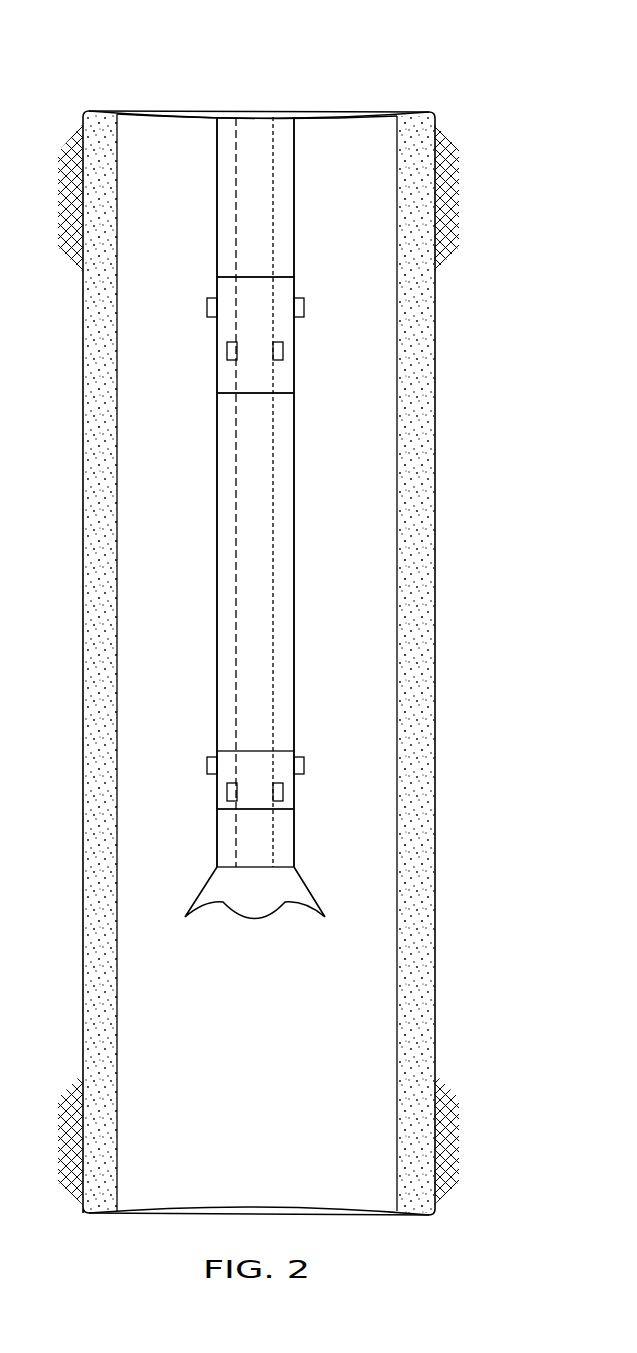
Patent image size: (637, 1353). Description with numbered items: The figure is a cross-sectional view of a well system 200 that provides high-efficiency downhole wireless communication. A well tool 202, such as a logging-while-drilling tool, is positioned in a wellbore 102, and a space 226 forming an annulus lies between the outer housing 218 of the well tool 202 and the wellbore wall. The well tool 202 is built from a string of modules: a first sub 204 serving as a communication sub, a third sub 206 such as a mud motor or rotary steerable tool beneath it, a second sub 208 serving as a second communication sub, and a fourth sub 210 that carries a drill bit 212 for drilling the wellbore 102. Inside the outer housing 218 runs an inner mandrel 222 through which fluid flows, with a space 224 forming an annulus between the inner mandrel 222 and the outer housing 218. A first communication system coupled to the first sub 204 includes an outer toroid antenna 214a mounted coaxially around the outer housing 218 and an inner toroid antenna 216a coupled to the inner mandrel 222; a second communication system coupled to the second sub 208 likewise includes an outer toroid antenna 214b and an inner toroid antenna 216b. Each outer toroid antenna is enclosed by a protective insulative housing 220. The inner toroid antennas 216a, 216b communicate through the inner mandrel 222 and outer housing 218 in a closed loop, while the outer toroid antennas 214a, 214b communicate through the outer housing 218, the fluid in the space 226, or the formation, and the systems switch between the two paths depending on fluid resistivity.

The well system 200 is at (323, 72).
The wellbore 102 is at (397, 543).
The space 226 is at (378, 617).
The well tool 202 is at (295, 213).
The outer housing 218 is at (295, 153).
The inner mandrel 222 is at (217, 160).
The space 224 is at (279, 583).
The housing 220 is at (208, 298).
The first sub 204 is at (295, 332).
The outer toroid antenna 214a is at (207, 310).
The inner toroid antenna 216a is at (229, 356).
The third sub 206 is at (295, 463).
The second sub 208 is at (295, 787).
The outer toroid antenna 214b is at (207, 763).
The inner toroid antenna 216b is at (229, 795).
The fourth sub 210 is at (295, 833).
The drill bit 212 is at (263, 918).